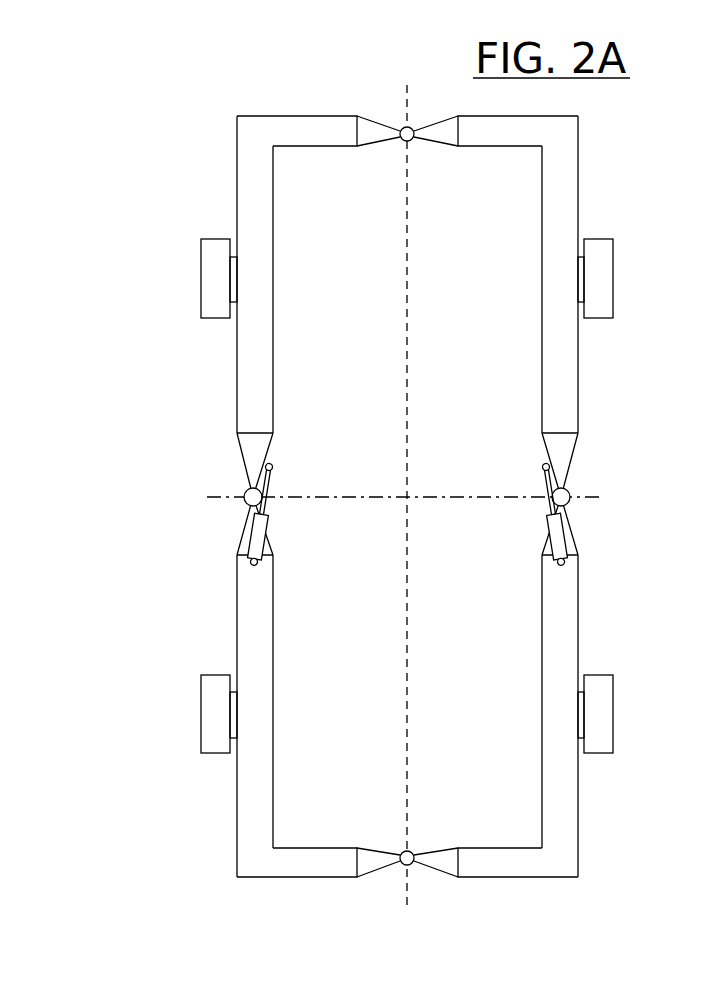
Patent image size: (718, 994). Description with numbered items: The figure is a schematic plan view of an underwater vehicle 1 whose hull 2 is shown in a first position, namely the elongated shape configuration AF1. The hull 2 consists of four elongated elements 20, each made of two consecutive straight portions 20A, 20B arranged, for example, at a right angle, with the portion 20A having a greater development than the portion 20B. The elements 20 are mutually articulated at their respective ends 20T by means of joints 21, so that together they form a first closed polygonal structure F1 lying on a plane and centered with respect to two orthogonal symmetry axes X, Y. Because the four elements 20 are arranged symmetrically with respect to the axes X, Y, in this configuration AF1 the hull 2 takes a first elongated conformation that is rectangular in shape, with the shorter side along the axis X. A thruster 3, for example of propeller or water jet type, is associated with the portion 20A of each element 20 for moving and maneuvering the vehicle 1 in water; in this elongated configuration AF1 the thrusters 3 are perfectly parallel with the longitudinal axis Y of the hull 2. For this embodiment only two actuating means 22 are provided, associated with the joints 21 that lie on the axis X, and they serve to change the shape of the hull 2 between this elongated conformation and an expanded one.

The underwater vehicle 1 is at (409, 478).
The hull 2 is at (205, 810).
The thrusters 3 is at (218, 270).
The elongated elements 20 is at (409, 478).
The straight portion 20A is at (262, 380).
The straight portion 20B is at (290, 126).
The ends 20T is at (376, 133).
The joints 21 is at (400, 140).
The actuating means 22 is at (263, 530).
The first closed polygonal structure F1 is at (205, 140).
The elongated shape configuration AF1 is at (178, 528).
The symmetry axis X is at (443, 497).
The longitudinal axis Y is at (408, 424).